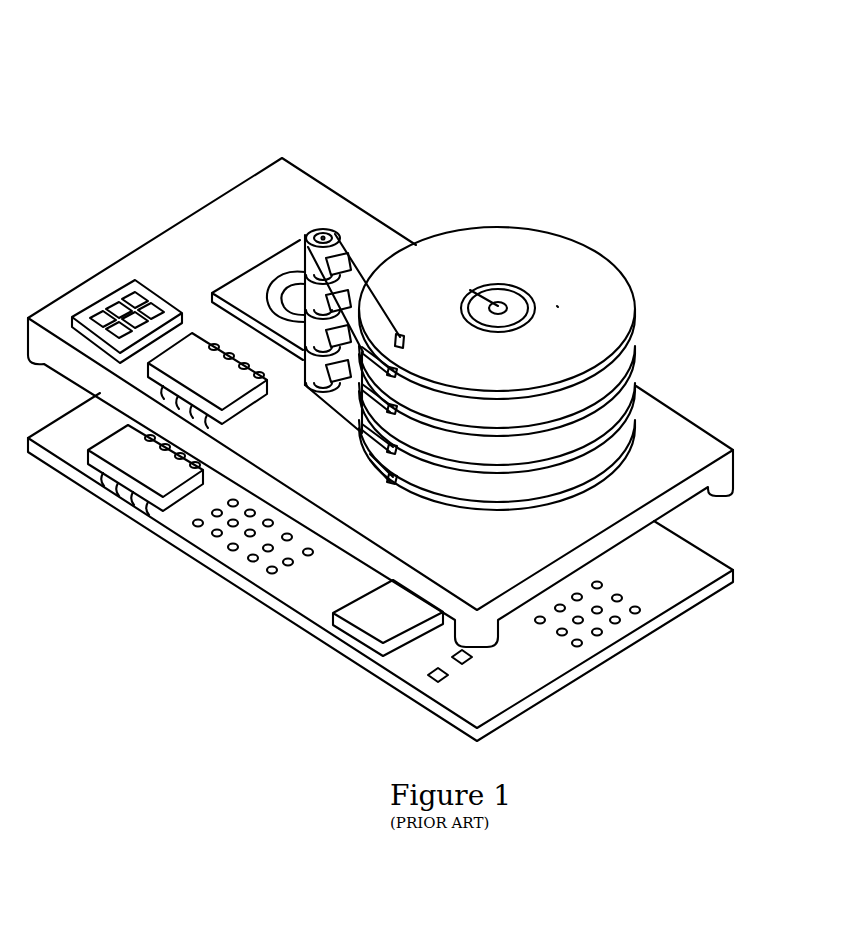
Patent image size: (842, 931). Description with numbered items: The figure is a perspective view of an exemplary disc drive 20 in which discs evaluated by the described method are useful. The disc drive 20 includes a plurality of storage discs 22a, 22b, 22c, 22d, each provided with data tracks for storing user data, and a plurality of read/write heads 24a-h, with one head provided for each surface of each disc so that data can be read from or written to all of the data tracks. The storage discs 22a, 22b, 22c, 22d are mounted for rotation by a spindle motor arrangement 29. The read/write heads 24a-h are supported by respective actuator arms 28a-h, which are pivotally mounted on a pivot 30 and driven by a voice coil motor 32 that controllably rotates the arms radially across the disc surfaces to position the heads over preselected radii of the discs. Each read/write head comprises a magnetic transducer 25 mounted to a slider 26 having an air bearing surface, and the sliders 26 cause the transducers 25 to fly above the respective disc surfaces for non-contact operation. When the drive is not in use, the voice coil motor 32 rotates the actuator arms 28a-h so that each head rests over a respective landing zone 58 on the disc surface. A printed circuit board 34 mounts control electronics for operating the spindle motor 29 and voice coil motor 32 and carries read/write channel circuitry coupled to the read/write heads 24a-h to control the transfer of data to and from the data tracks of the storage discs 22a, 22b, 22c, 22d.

The disc drive 20 is at (42, 198).
The storage disc 22a is at (635, 297).
The storage disc 22b is at (635, 363).
The storage disc 22c is at (635, 407).
The storage disc 22d is at (635, 440).
The read/write heads 24a-h is at (470, 290).
The magnetic transducer 25 is at (362, 432).
The slider 26 is at (404, 341).
The actuator arms 28a-h is at (352, 288).
The spindle motor arrangement 29 is at (500, 306).
The pivot 30 is at (322, 232).
The voice coil motor 32 is at (240, 285).
The printed circuit board 34 is at (525, 672).
The landing zone 58 is at (558, 307).